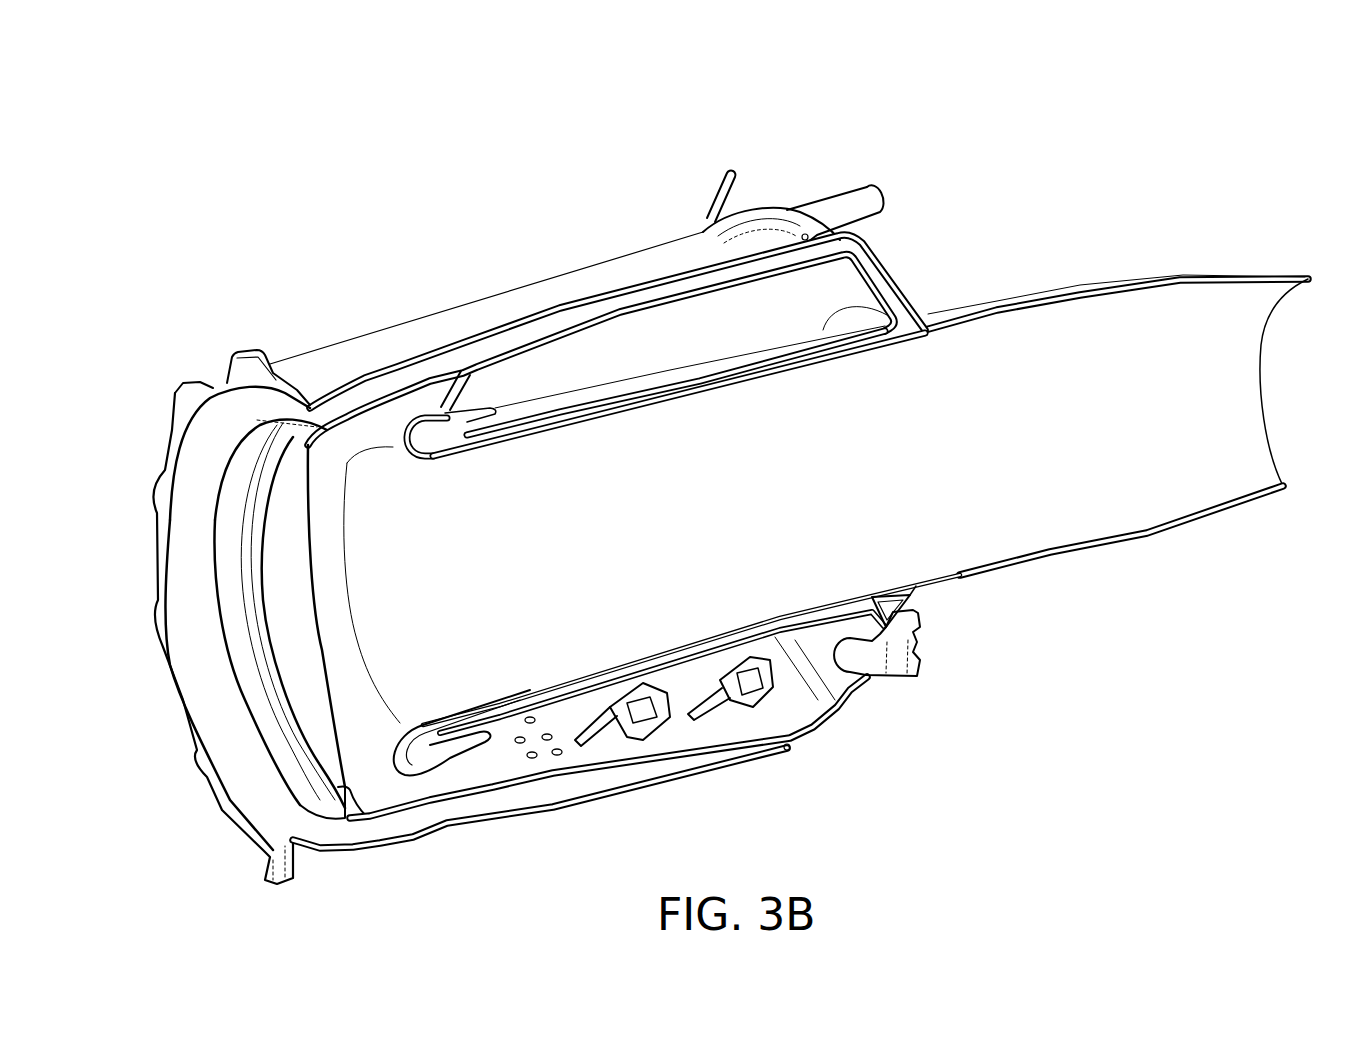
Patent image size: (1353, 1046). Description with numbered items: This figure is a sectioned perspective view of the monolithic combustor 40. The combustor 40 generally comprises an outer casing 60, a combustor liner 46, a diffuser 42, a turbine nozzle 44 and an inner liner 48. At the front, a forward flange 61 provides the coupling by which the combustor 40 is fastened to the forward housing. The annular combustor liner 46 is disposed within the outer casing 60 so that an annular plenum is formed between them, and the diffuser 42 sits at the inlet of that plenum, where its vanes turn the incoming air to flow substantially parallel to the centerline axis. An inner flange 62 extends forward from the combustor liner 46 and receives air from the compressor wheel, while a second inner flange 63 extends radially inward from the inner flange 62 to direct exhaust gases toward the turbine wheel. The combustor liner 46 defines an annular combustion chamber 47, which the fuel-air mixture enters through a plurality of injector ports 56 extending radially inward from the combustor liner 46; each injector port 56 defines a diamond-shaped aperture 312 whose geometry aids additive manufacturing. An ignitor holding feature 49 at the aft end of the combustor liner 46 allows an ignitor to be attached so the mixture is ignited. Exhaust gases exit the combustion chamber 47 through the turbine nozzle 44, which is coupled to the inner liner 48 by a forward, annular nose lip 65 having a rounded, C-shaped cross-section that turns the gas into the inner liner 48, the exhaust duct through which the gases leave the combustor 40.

The combustor 40 is at (553, 158).
The diffuser 42 is at (401, 360).
The turbine nozzle 44 is at (471, 424).
The combustor liner 46 is at (687, 285).
The combustion chamber 47 is at (688, 323).
The inner liner 48 is at (752, 442).
The ignitor holding feature 49 is at (913, 670).
The injector port 56 is at (747, 690).
The outer casing 60 is at (460, 303).
The forward flange 61 is at (213, 385).
The inner flange 62 is at (226, 478).
The inner flange 63 is at (262, 550).
The forward, annular nose lip 65 is at (387, 767).
The diamond-shaped aperture 312 is at (770, 687).